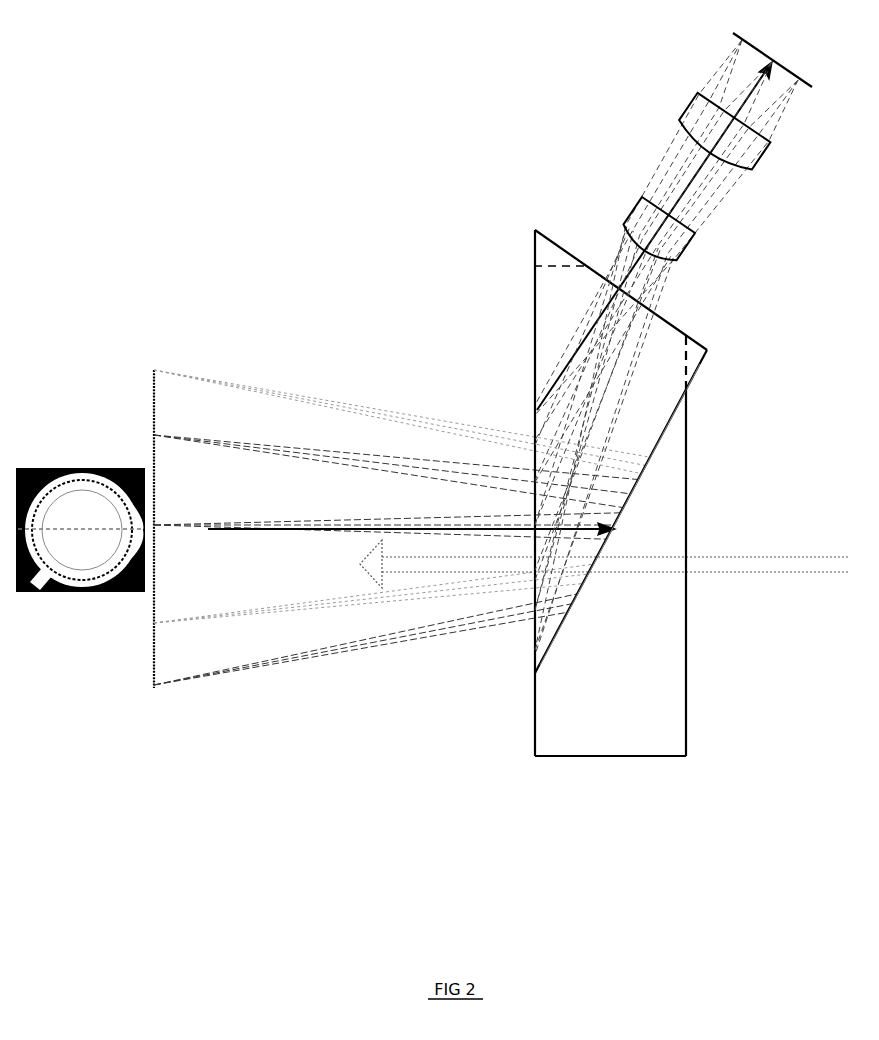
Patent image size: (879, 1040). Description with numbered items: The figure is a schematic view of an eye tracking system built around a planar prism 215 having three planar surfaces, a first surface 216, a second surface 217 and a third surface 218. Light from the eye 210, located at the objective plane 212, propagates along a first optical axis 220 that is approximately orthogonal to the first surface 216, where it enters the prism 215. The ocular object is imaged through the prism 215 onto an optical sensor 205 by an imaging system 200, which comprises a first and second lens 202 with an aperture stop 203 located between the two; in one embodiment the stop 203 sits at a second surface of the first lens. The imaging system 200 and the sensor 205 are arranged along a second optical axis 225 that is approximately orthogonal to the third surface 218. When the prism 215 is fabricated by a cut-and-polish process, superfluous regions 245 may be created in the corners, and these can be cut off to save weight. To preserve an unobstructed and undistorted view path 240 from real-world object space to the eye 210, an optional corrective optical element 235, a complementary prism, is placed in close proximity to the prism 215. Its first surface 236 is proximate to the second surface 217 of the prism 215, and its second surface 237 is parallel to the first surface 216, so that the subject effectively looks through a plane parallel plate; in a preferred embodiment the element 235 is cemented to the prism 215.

The imaging system 200 is at (663, 148).
The first and second lens 202 is at (683, 243).
The aperture stop 203 is at (655, 202).
The optical sensor 205 is at (733, 33).
The eye 210 is at (117, 542).
The objective plane 212 is at (155, 689).
The prism 215 is at (550, 307).
The first surface 216 is at (533, 400).
The second surface 217 is at (562, 625).
The third surface 218 is at (597, 273).
The first optical axis 220 is at (295, 527).
The second optical axis 225 is at (562, 367).
The corrective optical element 235 is at (634, 708).
The first surface 236 is at (587, 588).
The second surface 237 is at (687, 516).
The view path 240 is at (604, 564).
The superfluous regions 245 is at (708, 352).